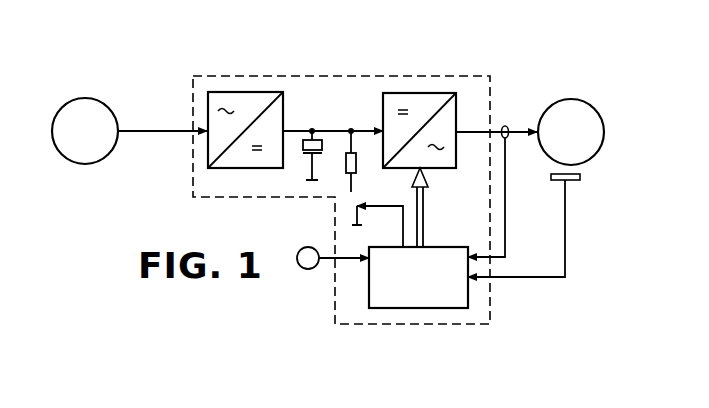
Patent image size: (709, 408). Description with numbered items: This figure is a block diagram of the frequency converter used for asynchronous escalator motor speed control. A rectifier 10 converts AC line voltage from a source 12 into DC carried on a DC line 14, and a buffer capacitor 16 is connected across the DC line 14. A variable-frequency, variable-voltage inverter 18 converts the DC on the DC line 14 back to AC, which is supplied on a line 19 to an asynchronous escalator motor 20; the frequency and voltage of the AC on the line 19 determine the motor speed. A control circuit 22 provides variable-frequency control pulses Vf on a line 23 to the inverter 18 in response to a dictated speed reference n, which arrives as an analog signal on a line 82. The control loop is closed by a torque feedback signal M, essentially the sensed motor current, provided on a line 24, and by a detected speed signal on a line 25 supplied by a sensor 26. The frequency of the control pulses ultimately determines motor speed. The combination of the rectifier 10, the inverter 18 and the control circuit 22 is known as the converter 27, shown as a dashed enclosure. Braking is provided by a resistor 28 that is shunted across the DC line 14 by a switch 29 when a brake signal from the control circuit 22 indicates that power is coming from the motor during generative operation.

The rectifier 10 is at (284, 112).
The source 12 is at (81, 98).
The DC line 14 is at (336, 130).
The buffer capacitor 16 is at (301, 152).
The inverter 18 is at (458, 118).
The line 19 is at (484, 131).
The asynchronous escalator motor 20 is at (600, 112).
The control circuit 22 is at (434, 247).
The line 23 is at (425, 192).
The line 24 is at (506, 186).
The line 25 is at (565, 236).
The sensor 26 is at (577, 181).
The converter 27 is at (478, 76).
The resistor 28 is at (346, 164).
The switch 29 is at (362, 206).
The line 82 is at (350, 259).